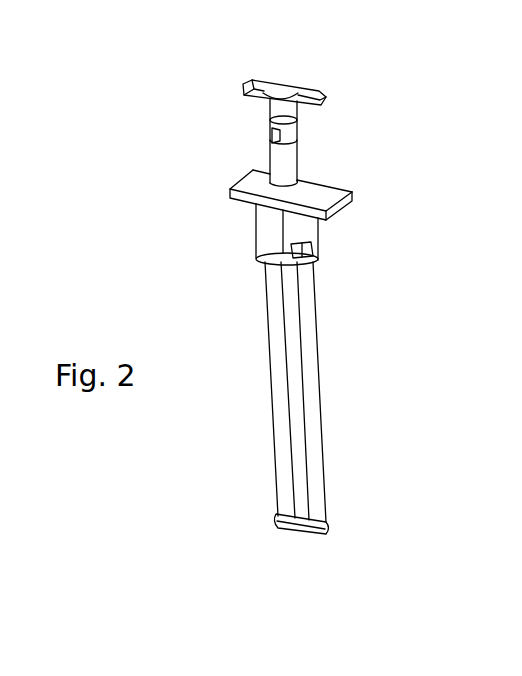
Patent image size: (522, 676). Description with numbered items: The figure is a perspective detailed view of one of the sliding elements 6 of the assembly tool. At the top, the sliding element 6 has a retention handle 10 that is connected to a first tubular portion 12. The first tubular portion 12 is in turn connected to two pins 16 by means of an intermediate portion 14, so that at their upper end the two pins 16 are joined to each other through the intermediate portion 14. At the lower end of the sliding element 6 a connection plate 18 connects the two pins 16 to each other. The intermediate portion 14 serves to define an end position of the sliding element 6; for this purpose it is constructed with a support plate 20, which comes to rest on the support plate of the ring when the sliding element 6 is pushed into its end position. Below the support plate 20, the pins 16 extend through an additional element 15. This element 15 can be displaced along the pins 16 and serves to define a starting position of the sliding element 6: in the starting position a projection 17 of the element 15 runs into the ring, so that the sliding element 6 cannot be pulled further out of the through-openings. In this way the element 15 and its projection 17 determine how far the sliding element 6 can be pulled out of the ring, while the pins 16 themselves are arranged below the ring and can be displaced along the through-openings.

The sliding element 6 is at (413, 85).
The retention handle 10 is at (291, 84).
The first tubular portion 12 is at (297, 133).
The intermediate portion 14 is at (318, 179).
The support plate 20 is at (352, 200).
The additional element 15 is at (305, 232).
The projection 17 is at (313, 250).
The pins 16 is at (272, 431).
The connection plate 18 is at (320, 530).